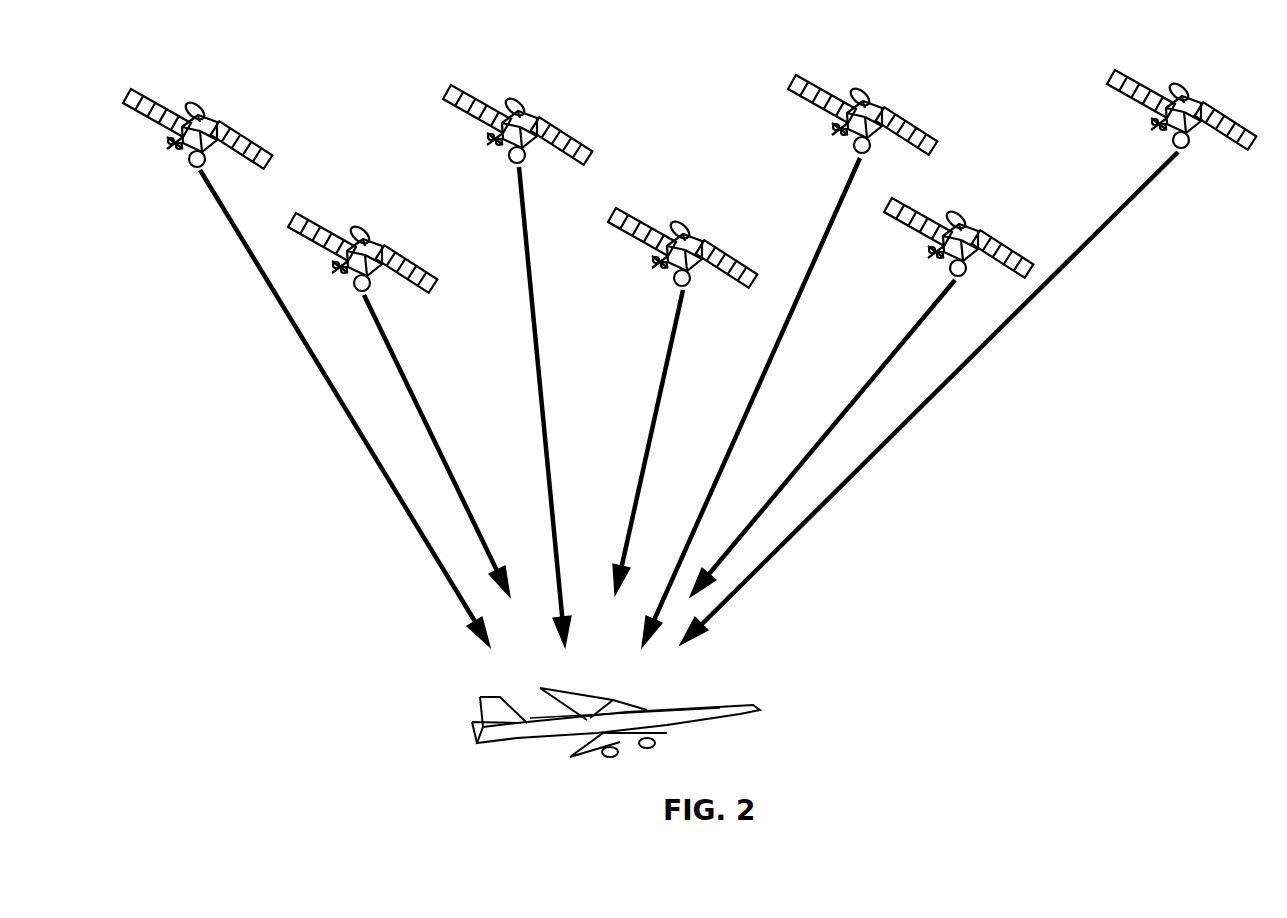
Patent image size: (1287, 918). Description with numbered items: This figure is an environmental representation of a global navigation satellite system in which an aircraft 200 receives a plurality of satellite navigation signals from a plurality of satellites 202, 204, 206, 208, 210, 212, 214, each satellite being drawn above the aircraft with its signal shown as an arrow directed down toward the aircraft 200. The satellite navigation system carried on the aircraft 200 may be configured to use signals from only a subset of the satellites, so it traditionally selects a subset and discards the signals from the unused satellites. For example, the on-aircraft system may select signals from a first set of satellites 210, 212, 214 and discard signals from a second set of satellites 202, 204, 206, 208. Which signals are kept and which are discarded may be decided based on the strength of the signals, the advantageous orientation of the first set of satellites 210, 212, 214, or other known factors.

The aircraft 200 is at (713, 700).
The satellite 202 is at (306, 351).
The satellite 204 is at (525, 348).
The satellite 206 is at (797, 343).
The satellite 208 is at (976, 341).
The satellite 210 is at (399, 388).
The satellite 212 is at (691, 386).
The satellite 214 is at (870, 382).